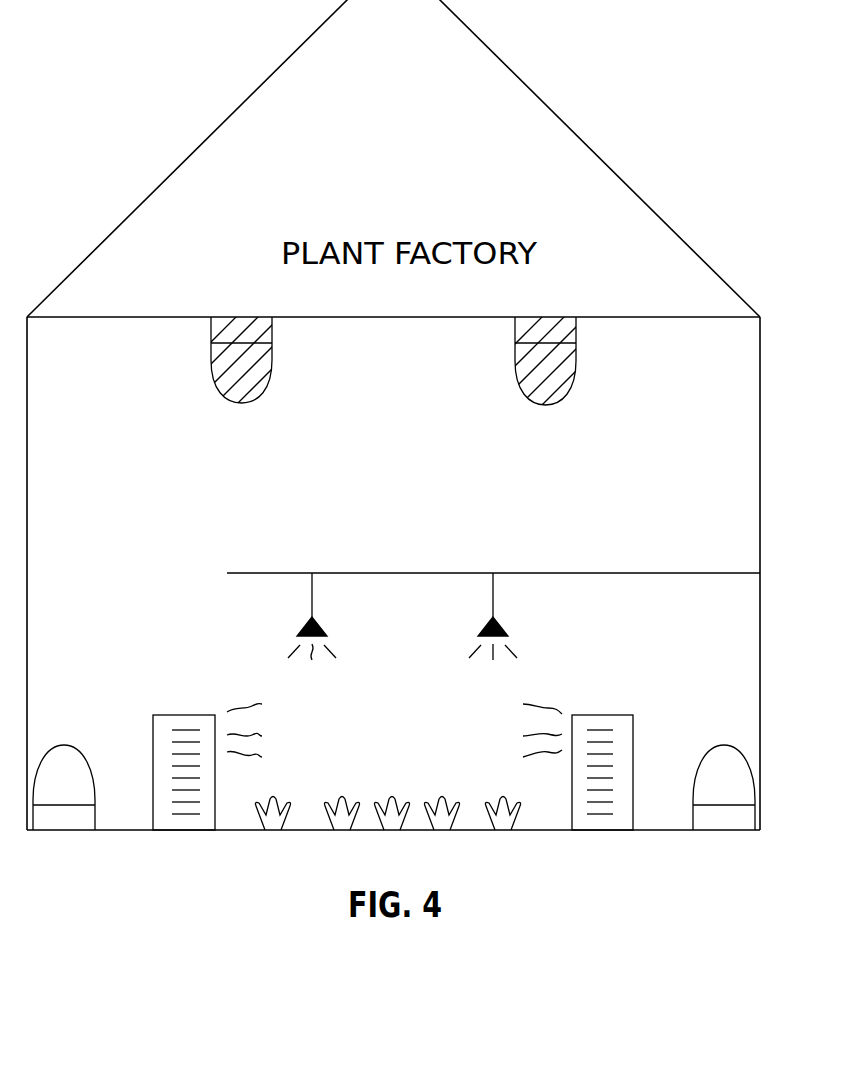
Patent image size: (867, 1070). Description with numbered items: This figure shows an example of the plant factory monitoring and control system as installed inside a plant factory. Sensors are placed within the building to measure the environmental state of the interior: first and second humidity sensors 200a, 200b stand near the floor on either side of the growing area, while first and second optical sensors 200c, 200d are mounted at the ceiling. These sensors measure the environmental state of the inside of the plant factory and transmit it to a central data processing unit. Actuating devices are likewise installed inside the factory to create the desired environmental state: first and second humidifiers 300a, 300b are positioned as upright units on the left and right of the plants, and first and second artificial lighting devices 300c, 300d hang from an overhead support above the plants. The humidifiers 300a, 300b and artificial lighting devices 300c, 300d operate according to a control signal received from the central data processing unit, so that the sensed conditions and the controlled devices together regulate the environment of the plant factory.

The first humidity sensor 200a is at (64, 745).
The second humidity sensor 200b is at (722, 745).
The first optical sensor 200c is at (272, 358).
The second optical sensor 200d is at (576, 358).
The first humidifier 300a is at (186, 715).
The second humidifier 300b is at (605, 715).
The first artificial lighting device 300c is at (312, 598).
The second artificial lighting device 300d is at (493, 598).